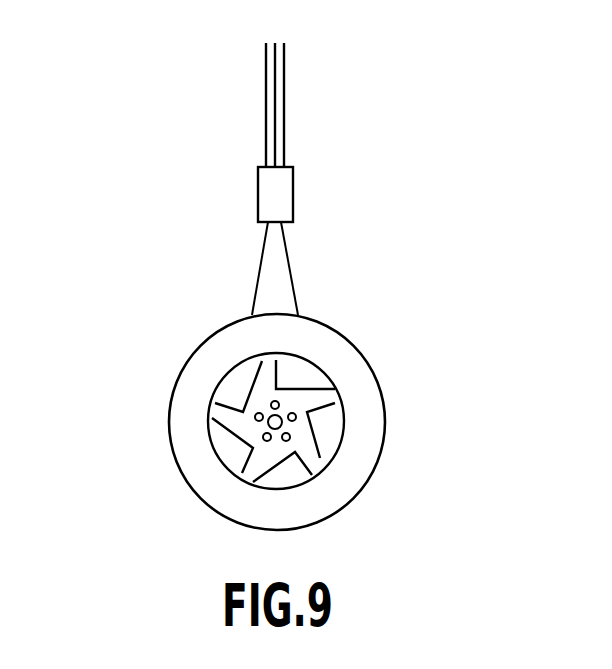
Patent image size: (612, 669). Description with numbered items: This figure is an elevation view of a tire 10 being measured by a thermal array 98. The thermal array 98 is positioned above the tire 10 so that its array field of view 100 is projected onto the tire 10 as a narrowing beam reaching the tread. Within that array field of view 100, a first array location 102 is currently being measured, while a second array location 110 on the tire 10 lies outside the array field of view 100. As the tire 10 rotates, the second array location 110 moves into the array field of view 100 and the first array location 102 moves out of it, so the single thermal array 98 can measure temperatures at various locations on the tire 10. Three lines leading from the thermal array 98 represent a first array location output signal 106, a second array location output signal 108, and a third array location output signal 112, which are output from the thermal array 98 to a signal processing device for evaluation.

The tire 10 is at (181, 456).
The thermal array 98 is at (293, 195).
The array field of view 100 is at (288, 262).
The first array location 102 is at (273, 300).
The first array location output signal 106 is at (266, 122).
The second array location output signal 108 is at (275, 76).
The second array location 110 is at (392, 422).
The third array location output signal 112 is at (284, 135).